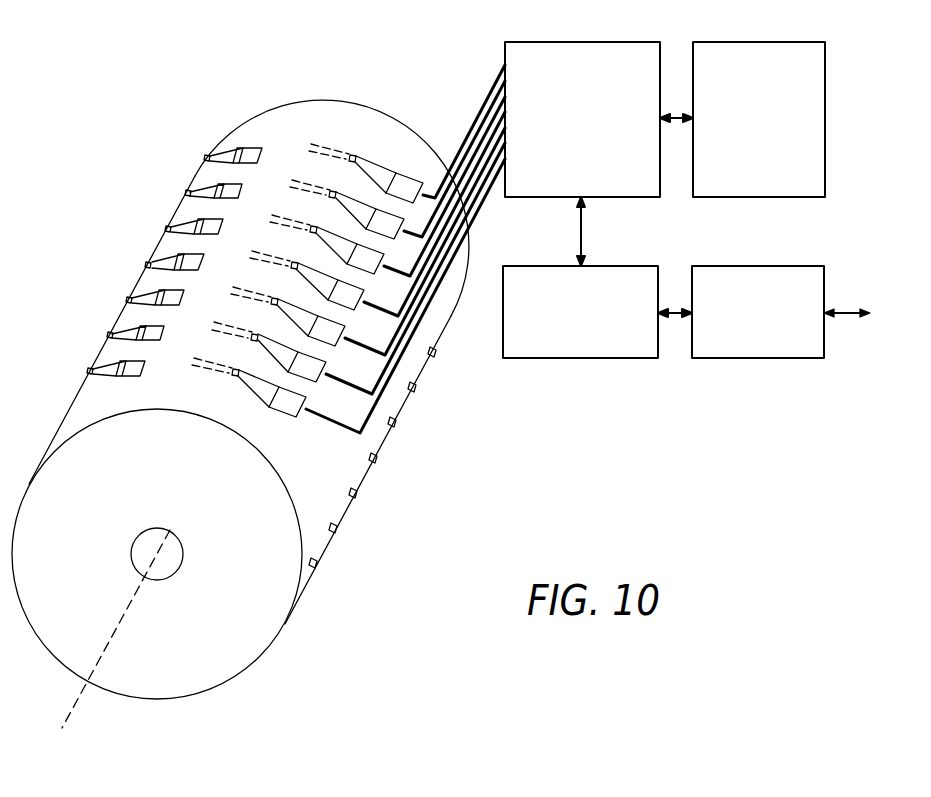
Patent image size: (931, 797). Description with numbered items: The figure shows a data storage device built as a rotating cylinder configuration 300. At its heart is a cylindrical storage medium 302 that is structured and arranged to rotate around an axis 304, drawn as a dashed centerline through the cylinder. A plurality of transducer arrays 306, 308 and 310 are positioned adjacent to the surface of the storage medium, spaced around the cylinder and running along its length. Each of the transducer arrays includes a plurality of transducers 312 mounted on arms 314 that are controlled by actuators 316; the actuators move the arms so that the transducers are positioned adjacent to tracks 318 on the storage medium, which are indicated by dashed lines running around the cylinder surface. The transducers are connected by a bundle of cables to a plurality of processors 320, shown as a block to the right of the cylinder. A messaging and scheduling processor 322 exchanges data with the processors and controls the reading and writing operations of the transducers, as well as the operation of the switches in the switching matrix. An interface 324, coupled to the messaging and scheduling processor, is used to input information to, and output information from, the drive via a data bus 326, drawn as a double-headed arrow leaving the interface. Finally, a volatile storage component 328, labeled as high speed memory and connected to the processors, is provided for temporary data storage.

The rotating cylinder configuration 300 is at (516, 468).
The cylindrical storage medium 302 is at (240, 417).
The axis 304 is at (75, 708).
The transducer array 306 is at (157, 553).
The transducer array 308 is at (174, 231).
The transducer array 310 is at (276, 640).
The transducer 312 is at (353, 154).
The arm 314 is at (380, 170).
The actuator 316 is at (412, 188).
The track 318 is at (333, 148).
The processors 320 is at (570, 42).
The messaging and scheduling processor 322 is at (582, 359).
The interface 324 is at (765, 359).
The data bus 326 is at (847, 318).
The volatile storage component 328 is at (772, 42).